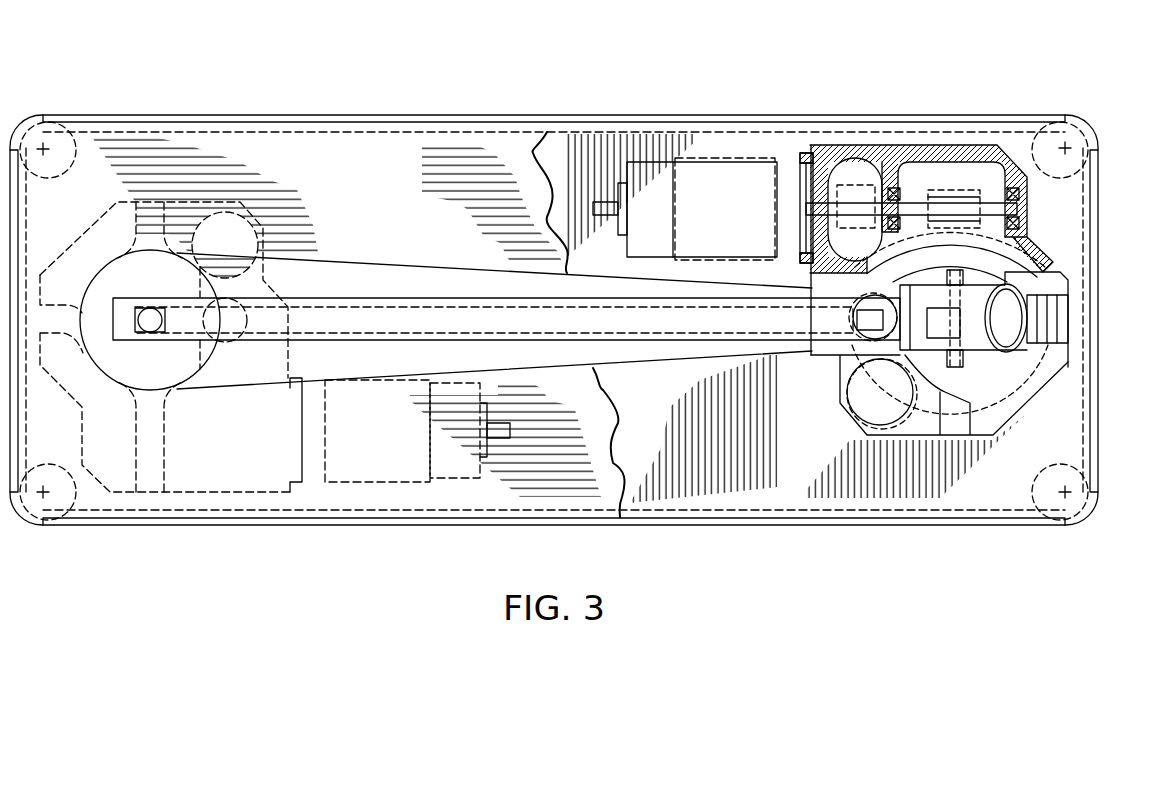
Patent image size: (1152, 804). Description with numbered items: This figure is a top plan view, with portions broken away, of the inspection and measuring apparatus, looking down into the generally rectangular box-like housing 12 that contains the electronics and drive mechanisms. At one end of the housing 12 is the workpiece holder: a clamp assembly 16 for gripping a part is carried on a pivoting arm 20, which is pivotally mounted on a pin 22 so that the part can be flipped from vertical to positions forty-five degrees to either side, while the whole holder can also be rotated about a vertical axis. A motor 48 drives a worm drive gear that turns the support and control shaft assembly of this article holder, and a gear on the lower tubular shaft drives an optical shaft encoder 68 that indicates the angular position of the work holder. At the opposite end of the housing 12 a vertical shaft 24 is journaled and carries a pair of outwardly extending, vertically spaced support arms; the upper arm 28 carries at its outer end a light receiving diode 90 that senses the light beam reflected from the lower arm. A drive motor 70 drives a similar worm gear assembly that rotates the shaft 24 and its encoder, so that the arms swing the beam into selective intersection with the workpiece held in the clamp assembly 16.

The housing 12 is at (437, 116).
The clamp assembly 16 is at (1040, 376).
The pivoting arm 20 is at (975, 305).
The pin 22 is at (973, 335).
The vertical shaft 24 is at (110, 257).
The upper support arm 28 is at (457, 279).
The motor 48 is at (755, 180).
The optical shaft encoder 68 is at (848, 403).
The drive motor 70 is at (405, 478).
The light receiving diode 90 is at (860, 330).